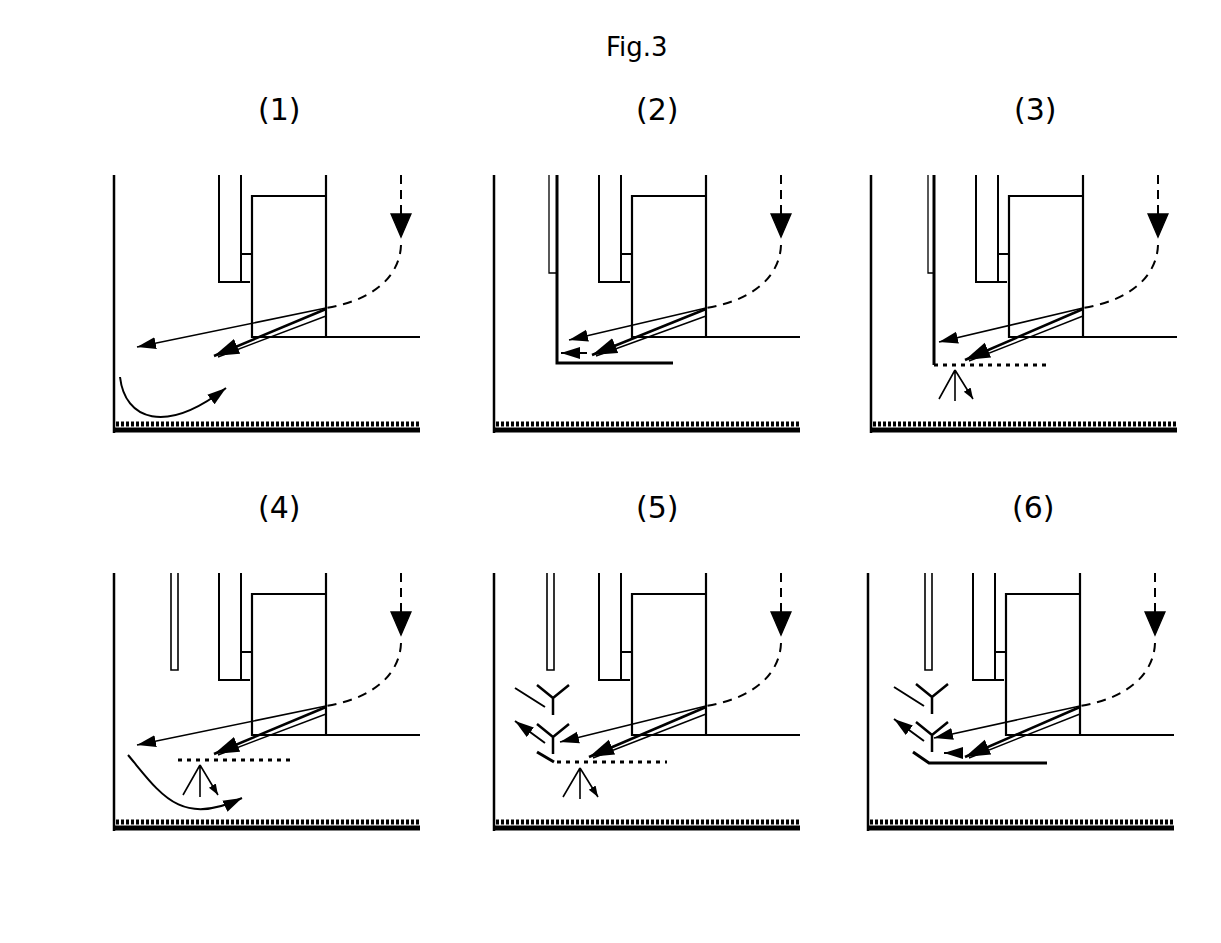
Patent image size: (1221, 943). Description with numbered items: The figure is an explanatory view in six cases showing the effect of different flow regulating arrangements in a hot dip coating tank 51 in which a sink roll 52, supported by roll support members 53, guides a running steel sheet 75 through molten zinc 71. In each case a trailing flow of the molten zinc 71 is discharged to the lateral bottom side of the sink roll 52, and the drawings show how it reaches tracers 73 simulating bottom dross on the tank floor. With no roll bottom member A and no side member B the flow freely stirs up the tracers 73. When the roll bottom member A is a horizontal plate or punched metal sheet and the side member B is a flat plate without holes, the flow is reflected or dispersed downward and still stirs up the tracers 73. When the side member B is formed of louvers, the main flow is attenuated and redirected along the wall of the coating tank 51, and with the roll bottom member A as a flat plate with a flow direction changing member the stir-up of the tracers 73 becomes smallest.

The coating tank 51 is at (114, 266).
The sink roll 52 is at (282, 206).
The roll support members 53 is at (233, 212).
The molten zinc 71 is at (354, 402).
The tracers 73 is at (291, 425).
The steel sheet 75 is at (373, 257).
The roll bottom member A is at (281, 363).
The side member B is at (759, 464).